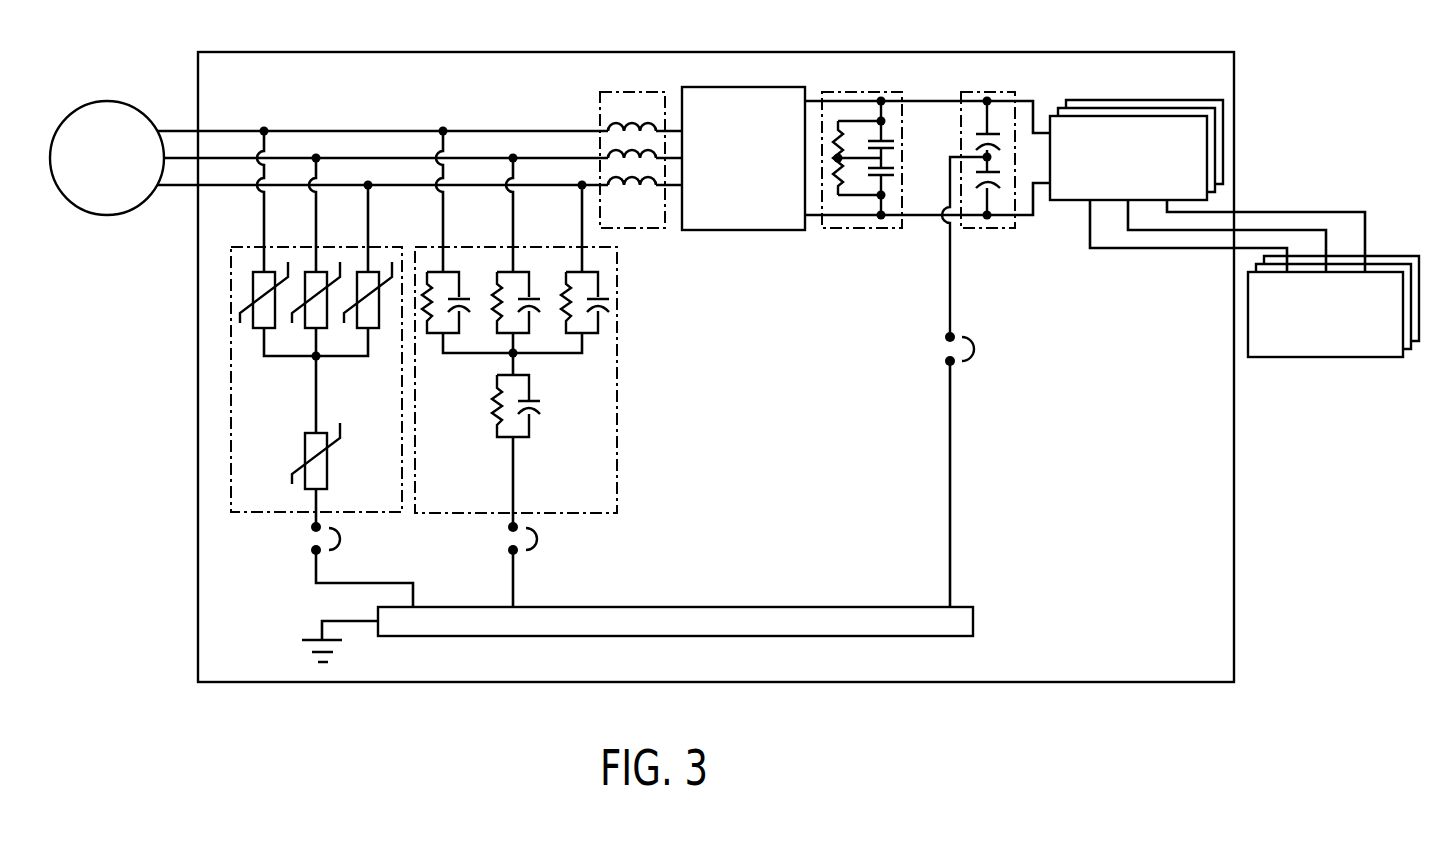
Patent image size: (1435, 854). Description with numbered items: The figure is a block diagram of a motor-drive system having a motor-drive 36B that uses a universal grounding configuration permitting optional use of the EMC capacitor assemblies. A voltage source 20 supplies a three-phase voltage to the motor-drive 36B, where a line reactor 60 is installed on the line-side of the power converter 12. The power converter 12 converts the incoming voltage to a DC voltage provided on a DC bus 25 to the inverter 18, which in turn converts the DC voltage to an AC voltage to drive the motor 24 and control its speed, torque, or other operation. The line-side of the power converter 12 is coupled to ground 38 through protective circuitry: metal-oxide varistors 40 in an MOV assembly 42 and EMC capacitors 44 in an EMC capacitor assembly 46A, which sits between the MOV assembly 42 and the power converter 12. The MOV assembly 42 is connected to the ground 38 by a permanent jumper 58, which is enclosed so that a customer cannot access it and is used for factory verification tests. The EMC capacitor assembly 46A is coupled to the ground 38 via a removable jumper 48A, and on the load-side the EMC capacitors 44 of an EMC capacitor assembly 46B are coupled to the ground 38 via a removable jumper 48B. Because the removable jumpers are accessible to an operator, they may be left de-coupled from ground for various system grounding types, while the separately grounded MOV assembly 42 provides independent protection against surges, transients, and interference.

The voltage source 20 is at (88, 104).
The motor-drive 36B is at (426, 51).
The line reactor 60 is at (615, 92).
The power converter 12 is at (766, 87).
The DC bus 25 is at (880, 92).
The electromagnetic compatibility (EMC) capacitor 44 is at (985, 140).
The EMC capacitor assembly 46B is at (1000, 92).
The inverter 18 is at (1070, 200).
The motor 24 is at (1308, 357).
The metal-oxide varistor 40 is at (262, 330).
The MOV assembly 42 is at (316, 412).
The permanent jumper 58 is at (347, 541).
The jumper 48A is at (544, 541).
The EMC capacitor assembly 46A is at (617, 448).
The jumper 48B is at (977, 350).
The ground 38 is at (808, 607).